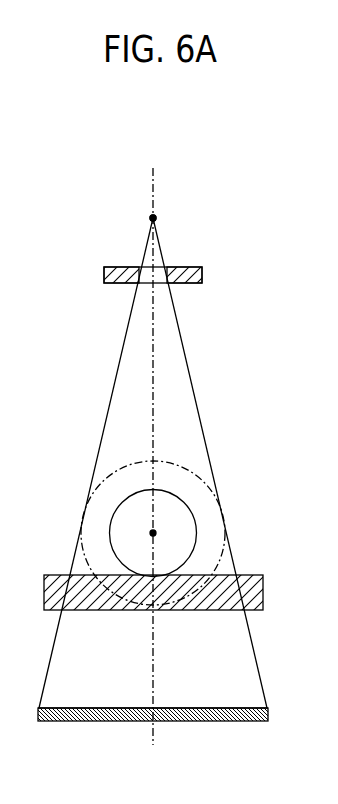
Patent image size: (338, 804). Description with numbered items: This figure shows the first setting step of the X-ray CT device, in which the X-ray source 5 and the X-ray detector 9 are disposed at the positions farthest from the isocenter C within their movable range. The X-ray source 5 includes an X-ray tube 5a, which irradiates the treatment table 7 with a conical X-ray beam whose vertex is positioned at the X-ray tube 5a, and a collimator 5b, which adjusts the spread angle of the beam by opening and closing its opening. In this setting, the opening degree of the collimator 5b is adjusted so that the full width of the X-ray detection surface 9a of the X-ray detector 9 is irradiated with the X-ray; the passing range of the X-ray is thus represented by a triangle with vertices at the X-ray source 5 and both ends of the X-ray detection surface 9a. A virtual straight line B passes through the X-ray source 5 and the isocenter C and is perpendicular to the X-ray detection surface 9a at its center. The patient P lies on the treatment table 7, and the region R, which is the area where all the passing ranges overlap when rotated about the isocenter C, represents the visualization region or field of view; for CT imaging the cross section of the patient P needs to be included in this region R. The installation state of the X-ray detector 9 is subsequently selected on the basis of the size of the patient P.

The X-ray source 5 is at (186, 224).
The X-ray tube 5a is at (150, 217).
The collimator 5b is at (112, 267).
The treatment table 7 is at (252, 575).
The X-ray detector 9 is at (217, 722).
The X-ray detection surface 9a is at (235, 708).
The virtual straight line B is at (155, 368).
The region R is at (195, 469).
The isocenter C is at (151, 531).
The patient P is at (178, 517).